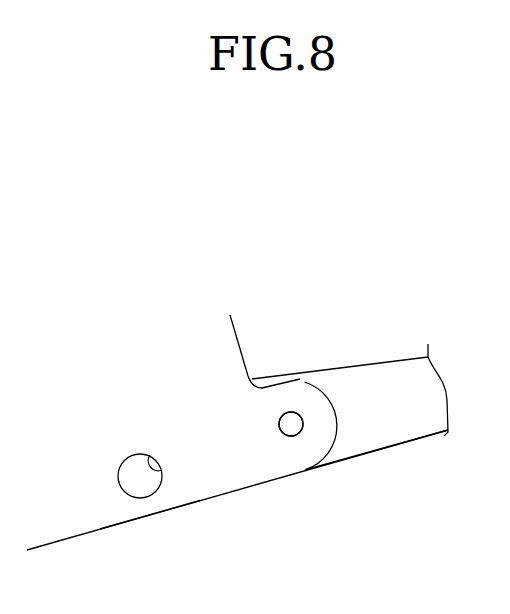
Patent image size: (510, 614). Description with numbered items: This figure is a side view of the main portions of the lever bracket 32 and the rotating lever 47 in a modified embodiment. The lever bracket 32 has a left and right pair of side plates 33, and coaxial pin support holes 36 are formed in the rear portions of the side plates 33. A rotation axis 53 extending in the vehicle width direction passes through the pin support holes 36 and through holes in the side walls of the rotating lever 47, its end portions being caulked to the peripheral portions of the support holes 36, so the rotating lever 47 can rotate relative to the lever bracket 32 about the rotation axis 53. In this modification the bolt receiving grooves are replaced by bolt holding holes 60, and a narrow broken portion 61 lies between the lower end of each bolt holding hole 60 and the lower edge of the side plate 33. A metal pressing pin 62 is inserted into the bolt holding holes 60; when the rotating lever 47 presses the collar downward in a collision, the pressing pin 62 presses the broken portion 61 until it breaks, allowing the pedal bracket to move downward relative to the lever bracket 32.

The lever bracket 32 is at (224, 332).
The side plates 33 is at (266, 470).
The pin support holes 36 is at (293, 436).
The rotating lever 47 is at (377, 376).
The rotation axis 53 is at (291, 412).
The bolt holding holes 60 is at (162, 470).
The broken portion 61 is at (147, 505).
The pressing pin 62 is at (132, 465).